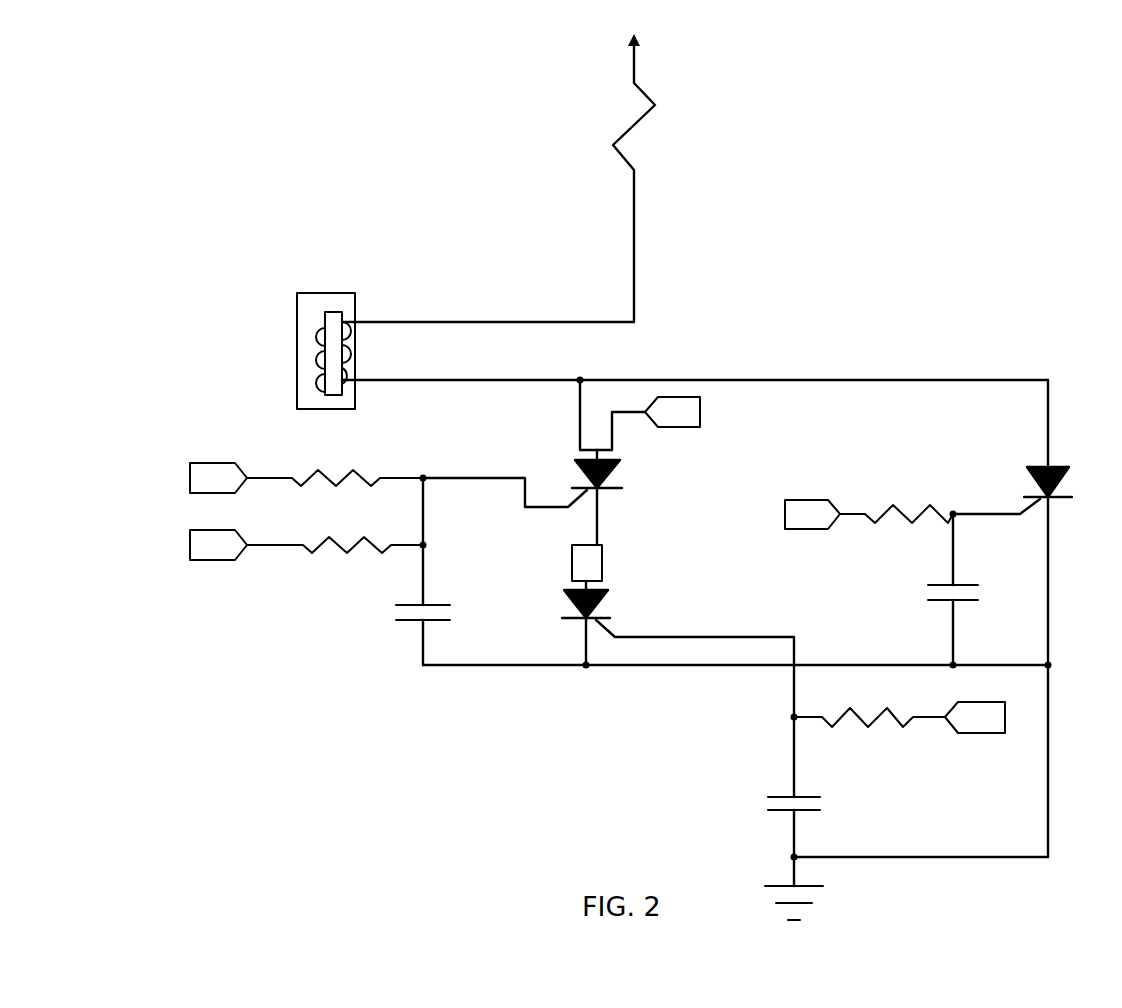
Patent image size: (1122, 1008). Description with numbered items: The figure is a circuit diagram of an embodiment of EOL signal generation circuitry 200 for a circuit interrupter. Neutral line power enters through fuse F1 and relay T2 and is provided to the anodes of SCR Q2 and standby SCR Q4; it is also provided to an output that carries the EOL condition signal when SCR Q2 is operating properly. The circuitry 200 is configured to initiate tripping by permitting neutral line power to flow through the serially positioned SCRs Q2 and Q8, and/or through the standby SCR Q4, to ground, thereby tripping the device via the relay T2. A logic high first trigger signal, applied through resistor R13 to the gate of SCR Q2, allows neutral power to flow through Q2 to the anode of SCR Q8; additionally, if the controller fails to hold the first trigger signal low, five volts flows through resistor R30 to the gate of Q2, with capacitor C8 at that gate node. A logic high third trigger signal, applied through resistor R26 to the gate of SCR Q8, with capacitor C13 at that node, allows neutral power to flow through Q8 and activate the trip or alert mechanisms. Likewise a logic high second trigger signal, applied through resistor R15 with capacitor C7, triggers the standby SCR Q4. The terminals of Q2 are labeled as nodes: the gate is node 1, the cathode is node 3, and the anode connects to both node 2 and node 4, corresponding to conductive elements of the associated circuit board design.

The EOL signal generation circuitry 200 is at (283, 166).
The fuse F1 is at (516, 178).
The relay T2 is at (374, 340).
The SCR Q2 is at (554, 462).
The SCR Q8 is at (678, 665).
The standby SCR Q4 is at (1032, 618).
The resistor R30 is at (335, 466).
The resistor R13 is at (335, 555).
The resistor R15 is at (896, 532).
The resistor R26 is at (869, 706).
The capacitor C8 is at (409, 571).
The capacitor C7 is at (966, 589).
The capacitor C13 is at (772, 815).
The node 1 is at (505, 492).
The node 2 is at (619, 431).
The node 3 is at (614, 516).
The node 4 is at (586, 415).